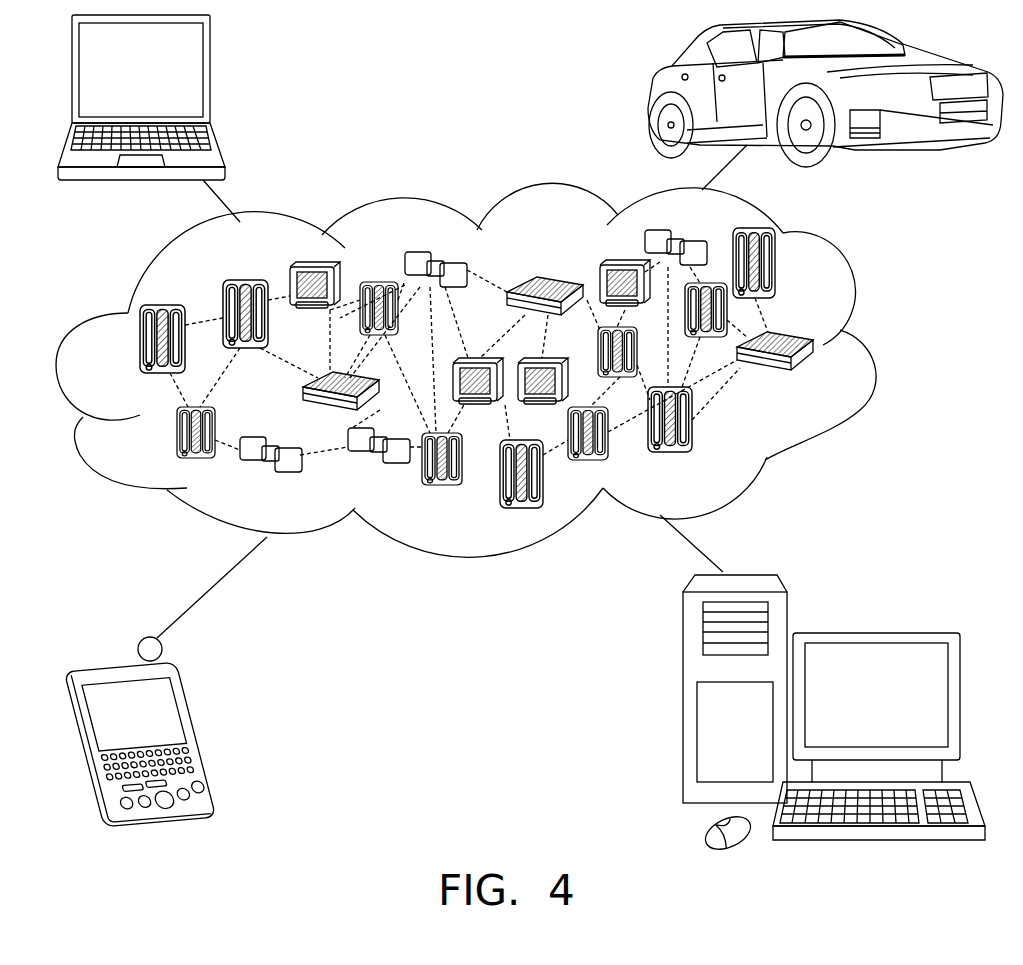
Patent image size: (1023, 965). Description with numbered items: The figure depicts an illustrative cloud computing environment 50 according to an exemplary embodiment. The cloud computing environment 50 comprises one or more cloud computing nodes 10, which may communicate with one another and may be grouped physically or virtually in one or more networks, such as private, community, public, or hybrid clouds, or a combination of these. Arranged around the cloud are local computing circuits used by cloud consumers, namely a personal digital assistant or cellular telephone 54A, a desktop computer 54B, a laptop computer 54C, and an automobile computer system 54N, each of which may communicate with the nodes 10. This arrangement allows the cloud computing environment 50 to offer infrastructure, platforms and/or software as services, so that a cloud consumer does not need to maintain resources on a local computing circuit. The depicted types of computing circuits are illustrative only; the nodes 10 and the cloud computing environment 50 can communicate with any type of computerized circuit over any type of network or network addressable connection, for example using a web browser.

The cloud computing nodes 10 is at (815, 377).
The cloud computing environment 50 is at (877, 347).
The personal digital assistant (PDA) or cellular telephone 54A is at (205, 727).
The desktop computer 54B is at (873, 633).
The laptop computer 54C is at (212, 78).
The automobile computer system 54N is at (653, 93).